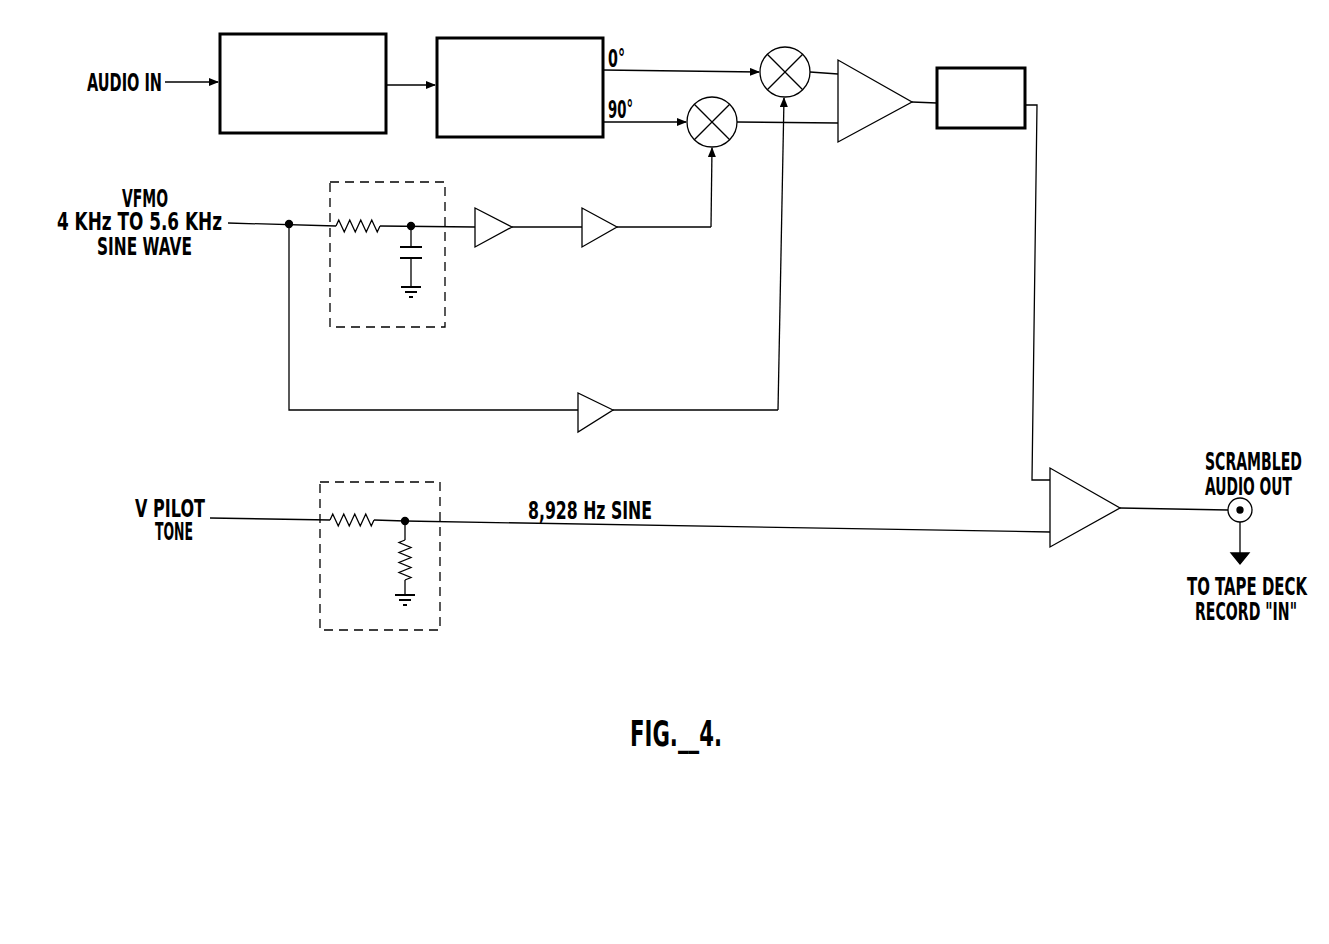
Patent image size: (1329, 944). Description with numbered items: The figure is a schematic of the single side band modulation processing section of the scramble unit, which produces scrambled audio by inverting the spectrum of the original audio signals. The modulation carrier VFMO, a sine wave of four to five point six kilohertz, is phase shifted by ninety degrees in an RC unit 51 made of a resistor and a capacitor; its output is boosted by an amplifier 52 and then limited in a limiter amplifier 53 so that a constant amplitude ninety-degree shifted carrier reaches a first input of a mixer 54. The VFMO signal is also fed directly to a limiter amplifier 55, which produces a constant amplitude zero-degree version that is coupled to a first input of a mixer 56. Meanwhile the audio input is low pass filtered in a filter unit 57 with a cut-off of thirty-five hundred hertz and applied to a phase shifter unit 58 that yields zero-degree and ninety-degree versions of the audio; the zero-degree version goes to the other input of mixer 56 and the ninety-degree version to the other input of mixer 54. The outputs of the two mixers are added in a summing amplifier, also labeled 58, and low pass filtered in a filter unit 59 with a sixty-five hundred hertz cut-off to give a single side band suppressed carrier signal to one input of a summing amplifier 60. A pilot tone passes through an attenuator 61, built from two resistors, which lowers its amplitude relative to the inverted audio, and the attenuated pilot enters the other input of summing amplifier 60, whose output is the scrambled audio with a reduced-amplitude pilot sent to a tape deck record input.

The RC unit 51 is at (421, 182).
The amplifier 52 is at (503, 199).
The limiter amplifier 53 is at (593, 214).
The mixer 54 is at (732, 86).
The limiter amplifier 55 is at (585, 393).
The mixer 56 is at (791, 48).
The filter unit 57 is at (368, 14).
The phase shifter unit 58 is at (583, 38).
The filter unit 59 is at (1001, 68).
The summing amplifier 60 is at (1084, 490).
The attenuator 61 is at (440, 568).